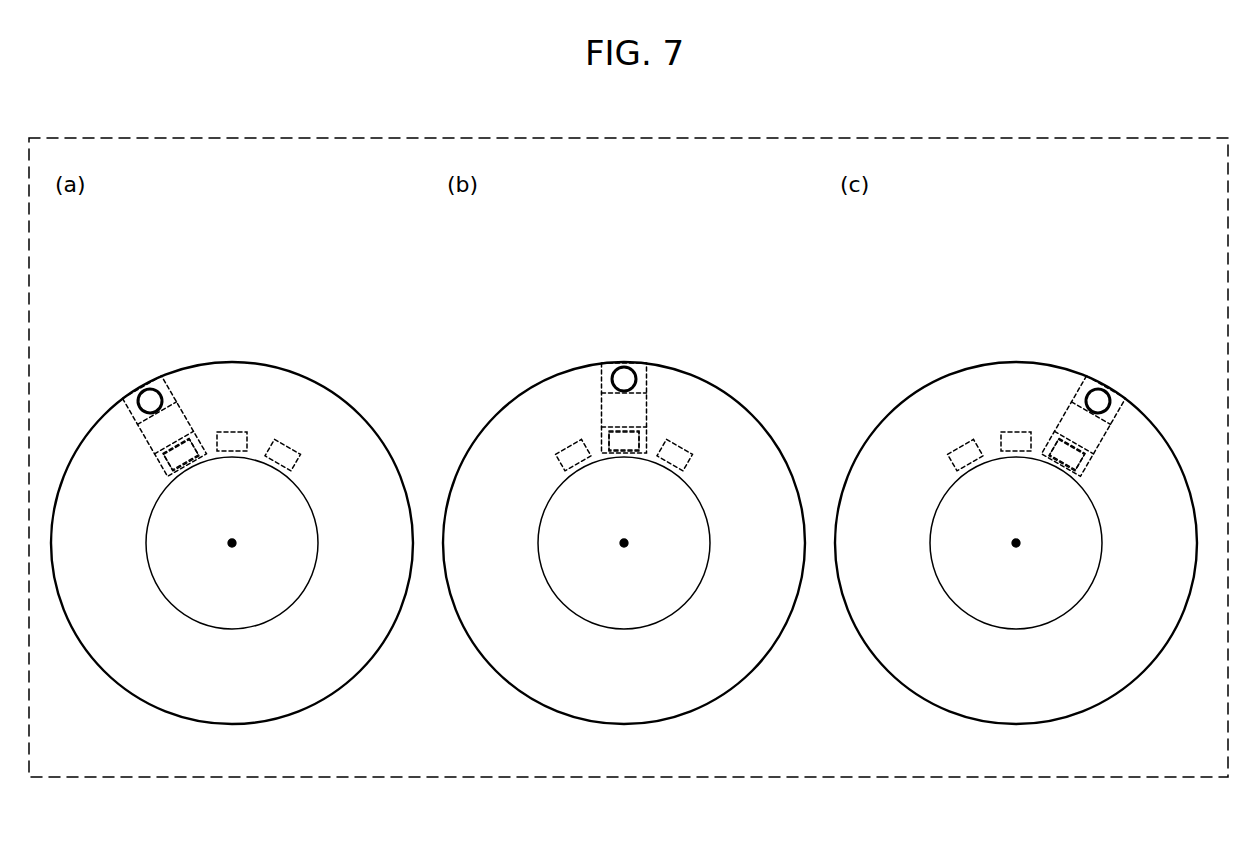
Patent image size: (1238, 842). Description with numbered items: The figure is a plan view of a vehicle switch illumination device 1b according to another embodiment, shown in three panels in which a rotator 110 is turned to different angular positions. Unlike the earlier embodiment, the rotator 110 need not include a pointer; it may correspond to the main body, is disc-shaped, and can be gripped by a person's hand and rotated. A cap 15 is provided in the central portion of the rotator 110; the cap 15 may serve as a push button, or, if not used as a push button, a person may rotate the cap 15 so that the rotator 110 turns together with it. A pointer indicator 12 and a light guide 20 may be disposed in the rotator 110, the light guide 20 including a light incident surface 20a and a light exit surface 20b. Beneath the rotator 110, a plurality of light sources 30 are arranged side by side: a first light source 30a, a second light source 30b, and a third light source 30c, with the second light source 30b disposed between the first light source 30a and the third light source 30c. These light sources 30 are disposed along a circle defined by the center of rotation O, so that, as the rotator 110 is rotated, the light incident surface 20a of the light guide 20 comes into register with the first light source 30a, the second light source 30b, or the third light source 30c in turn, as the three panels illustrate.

The vehicle switch illumination device 1b is at (232, 490).
The rotator 110 is at (252, 363).
The pointer indicator 12 is at (165, 426).
The cap 15 is at (190, 618).
The light guide 20 is at (179, 423).
The light incident surface 20a is at (180, 454).
The light exit surface 20b is at (150, 401).
The light sources 30 is at (226, 481).
The first light source 30a is at (174, 471).
The second light source 30b is at (232, 455).
The third light source 30c is at (291, 471).
The center of rotation O is at (228, 547).